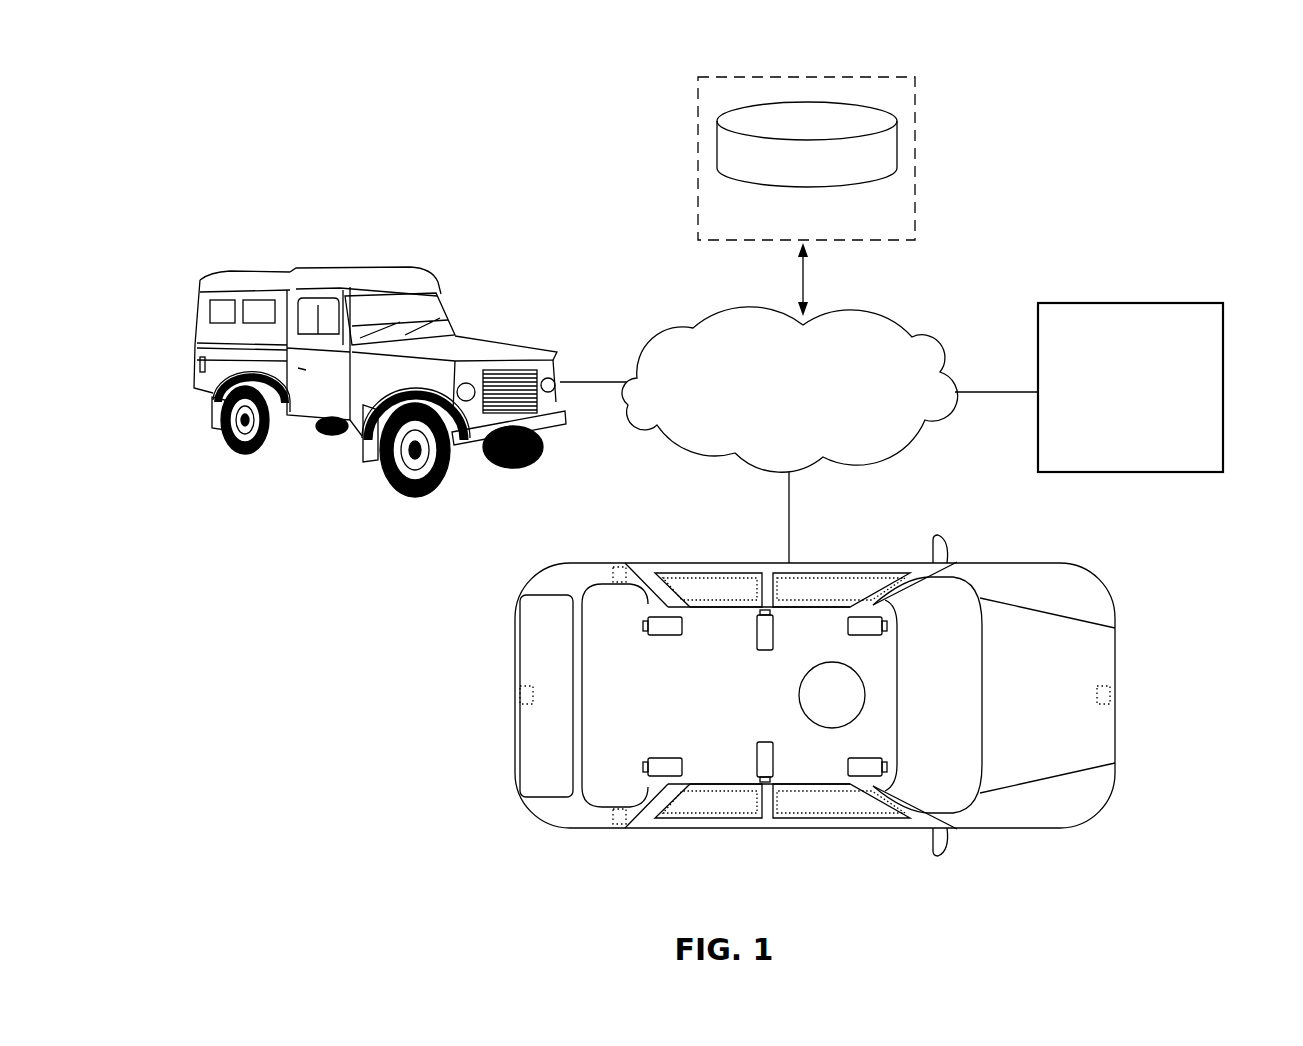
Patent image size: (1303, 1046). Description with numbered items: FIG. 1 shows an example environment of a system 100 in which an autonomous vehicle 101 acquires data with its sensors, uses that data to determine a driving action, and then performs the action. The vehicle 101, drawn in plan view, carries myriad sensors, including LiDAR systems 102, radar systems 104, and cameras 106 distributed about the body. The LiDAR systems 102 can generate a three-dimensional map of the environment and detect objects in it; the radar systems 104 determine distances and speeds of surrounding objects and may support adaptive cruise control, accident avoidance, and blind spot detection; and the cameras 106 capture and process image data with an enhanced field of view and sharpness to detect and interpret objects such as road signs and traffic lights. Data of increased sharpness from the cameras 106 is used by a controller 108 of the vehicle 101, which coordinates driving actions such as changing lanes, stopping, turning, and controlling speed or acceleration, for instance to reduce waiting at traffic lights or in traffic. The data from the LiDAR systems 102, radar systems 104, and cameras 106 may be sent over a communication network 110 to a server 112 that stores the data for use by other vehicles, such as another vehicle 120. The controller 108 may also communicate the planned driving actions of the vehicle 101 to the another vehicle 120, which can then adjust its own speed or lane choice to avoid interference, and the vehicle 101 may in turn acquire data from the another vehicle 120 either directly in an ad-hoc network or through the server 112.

The vehicle sensing system 100 is at (218, 95).
The autonomous vehicle 101 is at (1030, 647).
The LiDAR systems 102 is at (832, 730).
The radar systems 104 is at (624, 572).
The cameras 106 is at (643, 625).
The controller 108 is at (1130, 387).
The communication network 110 is at (790, 389).
The server 112 is at (915, 110).
The another vehicle 120 is at (324, 281).